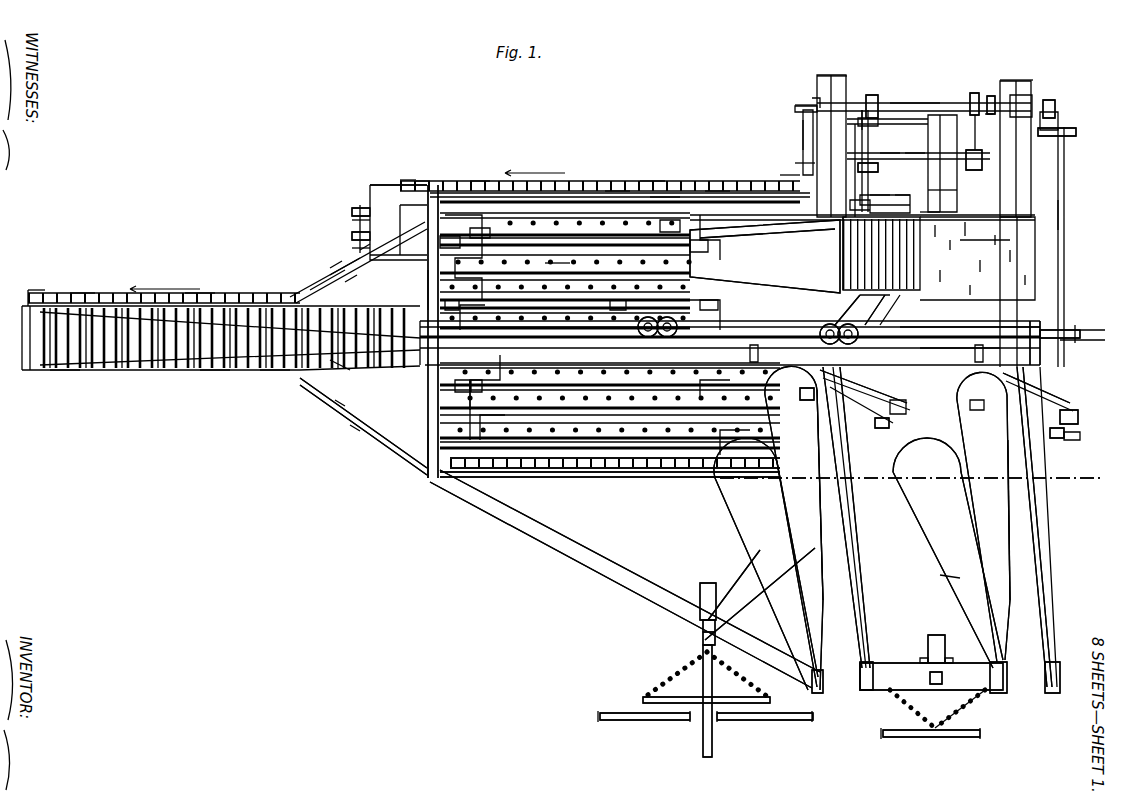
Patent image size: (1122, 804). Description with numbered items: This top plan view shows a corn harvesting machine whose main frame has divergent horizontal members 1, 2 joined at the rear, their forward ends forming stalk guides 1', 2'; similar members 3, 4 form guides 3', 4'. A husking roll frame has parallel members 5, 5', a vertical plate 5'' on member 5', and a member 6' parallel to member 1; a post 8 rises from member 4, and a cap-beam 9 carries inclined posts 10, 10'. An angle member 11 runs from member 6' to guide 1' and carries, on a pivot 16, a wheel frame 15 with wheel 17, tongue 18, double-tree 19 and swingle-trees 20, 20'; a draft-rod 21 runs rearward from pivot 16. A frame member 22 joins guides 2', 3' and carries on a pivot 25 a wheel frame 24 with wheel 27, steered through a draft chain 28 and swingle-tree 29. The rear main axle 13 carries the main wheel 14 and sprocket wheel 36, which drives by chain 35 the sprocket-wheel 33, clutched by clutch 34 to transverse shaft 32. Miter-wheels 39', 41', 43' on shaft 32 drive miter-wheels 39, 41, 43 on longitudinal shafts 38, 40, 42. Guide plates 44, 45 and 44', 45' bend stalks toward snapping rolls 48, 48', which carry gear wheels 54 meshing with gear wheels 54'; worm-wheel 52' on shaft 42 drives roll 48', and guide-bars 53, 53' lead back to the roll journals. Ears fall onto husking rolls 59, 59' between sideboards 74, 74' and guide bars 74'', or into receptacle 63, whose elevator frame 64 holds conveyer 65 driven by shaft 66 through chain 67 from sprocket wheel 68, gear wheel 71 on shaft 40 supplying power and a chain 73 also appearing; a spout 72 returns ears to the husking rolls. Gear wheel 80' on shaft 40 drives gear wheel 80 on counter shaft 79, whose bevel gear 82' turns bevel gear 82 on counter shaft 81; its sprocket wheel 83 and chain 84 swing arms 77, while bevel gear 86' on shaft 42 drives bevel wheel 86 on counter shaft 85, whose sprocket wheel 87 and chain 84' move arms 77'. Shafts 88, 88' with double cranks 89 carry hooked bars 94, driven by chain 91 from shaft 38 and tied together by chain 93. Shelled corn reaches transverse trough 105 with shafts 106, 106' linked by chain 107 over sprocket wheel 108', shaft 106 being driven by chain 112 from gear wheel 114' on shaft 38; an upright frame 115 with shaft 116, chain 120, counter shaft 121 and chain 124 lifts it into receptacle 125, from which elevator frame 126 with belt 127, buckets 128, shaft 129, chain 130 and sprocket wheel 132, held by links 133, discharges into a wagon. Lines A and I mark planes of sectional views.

The horizontal member 1 is at (824, 62).
The horizontal member 2 is at (845, 63).
The section line A is at (931, 150).
The frame member 3 is at (1005, 66).
The frame member 4 is at (1025, 66).
The miter-wheel 39' is at (801, 88).
The miter-wheel 39 is at (788, 96).
The longitudinal shaft 38 is at (802, 135).
The gear wheel 114' is at (787, 147).
The rotative shaft 106 is at (765, 160).
The spout 72 is at (717, 192).
The miter-wheel 41' is at (877, 91).
The transverse shaft 32 is at (905, 102).
The miter-wheel 41 is at (884, 119).
The longitudinal shaft 40 is at (890, 152).
The main axle 13 is at (915, 152).
The sprocket-wheel 33 is at (972, 95).
The clutch 34 is at (989, 96).
The miter-wheel 43' is at (1058, 94).
The miter-wheel 43 is at (1071, 120).
The sprocket chain 35 is at (990, 114).
The sprocket wheel 36 is at (975, 170).
The main wheel 14 is at (957, 192).
The gear wheel 71 is at (878, 166).
The sprocket chain 67 is at (885, 195).
The shaft 66 is at (905, 195).
The chain 73 is at (925, 212).
The longitudinal shaft 42 is at (1065, 213).
The receptacle 63 is at (1000, 242).
The rotative shaft 106' is at (418, 146).
The sprocket wheel 108' is at (450, 146).
The conveyer trough 105 is at (400, 184).
The sideboard 74' is at (485, 160).
The husking roll 59 is at (562, 205).
The husking roll 59' is at (592, 178).
The husking roll frame member 5' is at (617, 168).
The sprocket chain 107 is at (651, 181).
The vertical plate 5'' is at (649, 197).
The rotative shaft 116 is at (352, 212).
The drive chain 124 is at (355, 222).
The counter shaft 121 is at (352, 236).
The drive chain 120 is at (358, 250).
The upright frame 115 is at (345, 268).
The receptacle 125 is at (330, 283).
The inclined post 10' is at (401, 290).
The shaft 129 is at (36, 292).
The sprocket wheel 132 is at (80, 292).
The sprocket chain 130 is at (200, 292).
The elevator frame 126 is at (65, 372).
The conveyer belt 127 is at (106, 365).
The rods or links 133 is at (215, 370).
The buckets 128 is at (270, 372).
The double cranks 89 is at (335, 402).
The crank shaft 88' is at (363, 430).
The inclined post 10 is at (389, 454).
The drive chain 112 is at (770, 215).
The sprocket wheel 68 is at (780, 235).
The elevator frame 64 is at (843, 235).
The conveyer 65 is at (850, 270).
The gear wheel 80' is at (816, 309).
The gear wheel 80 is at (904, 310).
The guide bars 74'' is at (614, 324).
The gear wheel 54' is at (711, 340).
The gear wheel 54 is at (750, 340).
The snapping roll 48 is at (730, 350).
The counter shaft 79 is at (895, 340).
The snapping roll 48' is at (970, 342).
The counter shaft 81 is at (958, 349).
The worm-wheel 52' is at (1067, 315).
The post 8 is at (1045, 352).
The counter shaft 85 is at (1075, 405).
The cap-beam 9 is at (786, 382).
The arms 77 is at (805, 495).
The sprocket chain 84 is at (803, 421).
The sprocket wheel 83 is at (900, 395).
The bevel gear wheel 82 is at (906, 419).
The arms 77' is at (983, 517).
The sprocket chain 84' is at (985, 419).
The guide-bar 53' is at (997, 520).
The bevel gear wheel 86' is at (1064, 445).
The bevel wheel 86 is at (1083, 450).
The sprocket wheel 87 is at (1085, 410).
The bevel gear wheel 82' is at (934, 548).
The bars 94 is at (530, 440).
The sideboard 74 is at (610, 472).
The sprocket chain 93 is at (590, 470).
The husking roll frame member 5 is at (610, 486).
The crank shaft 88 is at (615, 482).
The drive chain 91 is at (712, 478).
The frame member 6' is at (419, 355).
The angle member 11 is at (565, 545).
The wheel 17 is at (700, 583).
The draft-rod 21 is at (745, 570).
The pivot 16 is at (700, 625).
The wheel frame 15 is at (700, 635).
The guide plate 45 is at (760, 594).
The double-tree 19 is at (645, 697).
The swingle-tree 20 is at (644, 733).
The tongue 18 is at (712, 750).
The swingle-tree 20' is at (765, 733).
The guide-bar 53 is at (857, 517).
The guide plate 44 is at (868, 517).
The guide plate 45' is at (929, 577).
The guide 1' is at (825, 666).
The guide 2' is at (876, 651).
The wheel 27 is at (935, 635).
The pivot 25 is at (930, 676).
The wheel frame 24 is at (947, 660).
The guide 3' is at (1007, 666).
The guide 4' is at (1060, 663).
The guide plate 44' is at (1050, 527).
The frame member 22 is at (880, 690).
The draft chain 28 is at (965, 707).
The swingle-tree 29 is at (920, 738).
The section line I is at (913, 479).